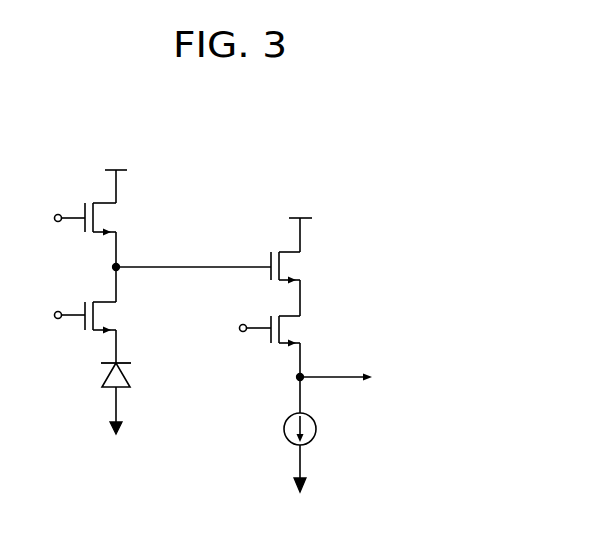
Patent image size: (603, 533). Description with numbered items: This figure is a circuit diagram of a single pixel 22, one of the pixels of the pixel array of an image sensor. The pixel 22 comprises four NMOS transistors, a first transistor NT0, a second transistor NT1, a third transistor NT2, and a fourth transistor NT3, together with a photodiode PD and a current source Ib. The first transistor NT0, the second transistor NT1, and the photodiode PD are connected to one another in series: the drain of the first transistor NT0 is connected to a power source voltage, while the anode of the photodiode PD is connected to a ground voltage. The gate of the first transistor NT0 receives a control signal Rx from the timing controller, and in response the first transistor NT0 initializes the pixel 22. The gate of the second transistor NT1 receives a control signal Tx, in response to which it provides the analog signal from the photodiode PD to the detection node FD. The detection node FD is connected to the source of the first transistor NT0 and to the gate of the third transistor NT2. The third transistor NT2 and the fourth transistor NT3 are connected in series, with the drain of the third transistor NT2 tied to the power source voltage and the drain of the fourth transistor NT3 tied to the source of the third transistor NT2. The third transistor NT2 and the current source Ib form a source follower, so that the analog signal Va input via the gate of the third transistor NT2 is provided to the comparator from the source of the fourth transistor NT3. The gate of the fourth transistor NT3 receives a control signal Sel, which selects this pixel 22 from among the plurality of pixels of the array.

The pixel 22 is at (403, 135).
The first transistor NT0 is at (88, 219).
The second transistor NT1 is at (87, 318).
The third transistor NT2 is at (301, 268).
The fourth transistor NT3 is at (270, 331).
The photodiode PD is at (104, 375).
The detection node FD is at (193, 257).
The control signal Rx is at (57, 218).
The control signal Tx is at (57, 315).
The control signal Sel is at (239, 328).
The analog signal Va is at (439, 379).
The current source Ib is at (312, 429).